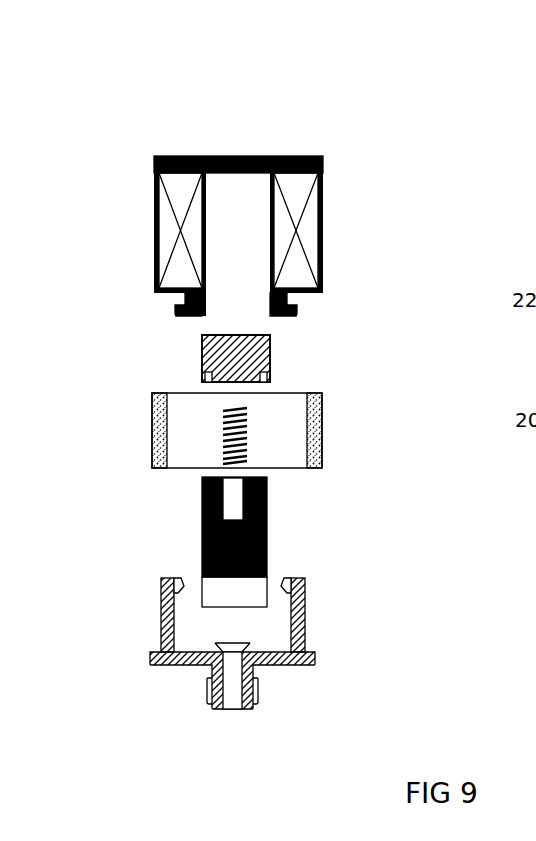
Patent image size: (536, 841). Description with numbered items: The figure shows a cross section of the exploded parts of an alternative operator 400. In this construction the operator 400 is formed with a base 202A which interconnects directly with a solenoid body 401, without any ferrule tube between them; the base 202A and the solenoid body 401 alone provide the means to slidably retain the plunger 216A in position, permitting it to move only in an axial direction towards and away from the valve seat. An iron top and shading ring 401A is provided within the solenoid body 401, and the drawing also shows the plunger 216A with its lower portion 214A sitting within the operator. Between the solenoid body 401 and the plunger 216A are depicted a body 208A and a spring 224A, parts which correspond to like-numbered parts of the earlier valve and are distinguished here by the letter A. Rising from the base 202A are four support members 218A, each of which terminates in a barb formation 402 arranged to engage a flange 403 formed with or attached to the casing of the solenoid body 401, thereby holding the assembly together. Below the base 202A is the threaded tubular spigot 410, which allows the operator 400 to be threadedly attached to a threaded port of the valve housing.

The operator 400 is at (285, 106).
The solenoid body 401 is at (322, 208).
The flange 403 is at (177, 307).
The iron top and shading ring 401A is at (200, 358).
The spacer body 208A is at (293, 405).
The spring 224A is at (252, 437).
The plunger 216A is at (257, 535).
The armature seat 214A is at (212, 596).
The support members 218A is at (252, 638).
The barb formation 402 is at (178, 577).
The base 202A is at (303, 666).
The threaded tubular spigot 410 is at (202, 701).